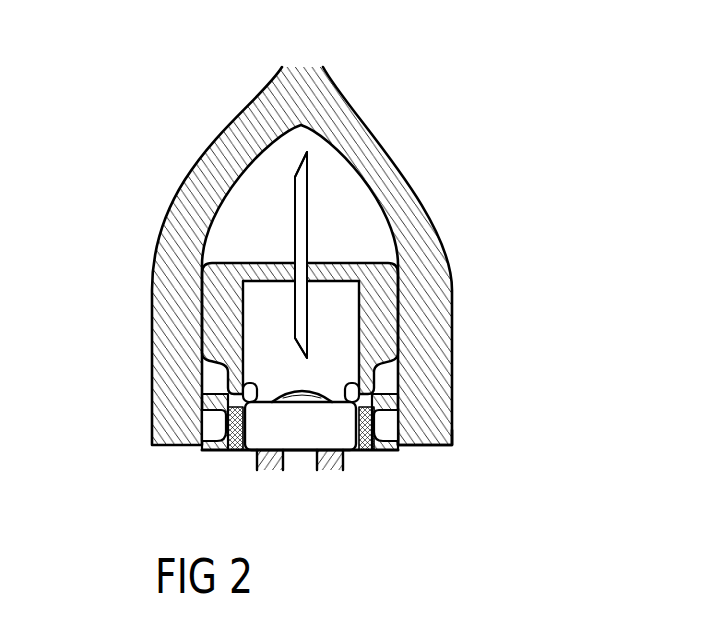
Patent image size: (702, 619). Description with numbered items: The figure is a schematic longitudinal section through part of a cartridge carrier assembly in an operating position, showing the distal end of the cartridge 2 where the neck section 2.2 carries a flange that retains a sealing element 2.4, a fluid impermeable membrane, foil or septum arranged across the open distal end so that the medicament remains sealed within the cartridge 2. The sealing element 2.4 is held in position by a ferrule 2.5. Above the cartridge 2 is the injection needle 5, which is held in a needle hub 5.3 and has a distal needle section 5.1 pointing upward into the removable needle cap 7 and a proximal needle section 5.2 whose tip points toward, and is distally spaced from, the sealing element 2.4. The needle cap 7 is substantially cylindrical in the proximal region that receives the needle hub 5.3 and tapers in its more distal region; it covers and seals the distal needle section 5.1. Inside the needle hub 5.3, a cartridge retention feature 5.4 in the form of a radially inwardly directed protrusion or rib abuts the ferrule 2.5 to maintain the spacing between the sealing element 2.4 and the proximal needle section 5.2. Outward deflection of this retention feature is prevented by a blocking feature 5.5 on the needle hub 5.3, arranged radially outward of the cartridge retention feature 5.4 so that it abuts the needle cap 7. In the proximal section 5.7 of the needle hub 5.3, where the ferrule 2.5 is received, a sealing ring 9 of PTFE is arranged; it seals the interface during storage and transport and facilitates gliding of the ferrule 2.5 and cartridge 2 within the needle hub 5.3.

The cartridge 2 is at (260, 456).
The neck section 2.2 is at (220, 489).
The sealing element 2.4 is at (242, 395).
The ferrule 2.5 is at (298, 428).
The injection needle 5 is at (302, 225).
The distal needle section 5.1 is at (300, 158).
The proximal needle section 5.2 is at (298, 348).
The needle hub 5.3 is at (383, 290).
The cartridge retention feature 5.4 is at (358, 393).
The blocking feature 5.5 is at (400, 404).
The proximal section 5.7 is at (433, 445).
The needle cap 7 is at (388, 152).
The sealing ring 9 is at (368, 450).